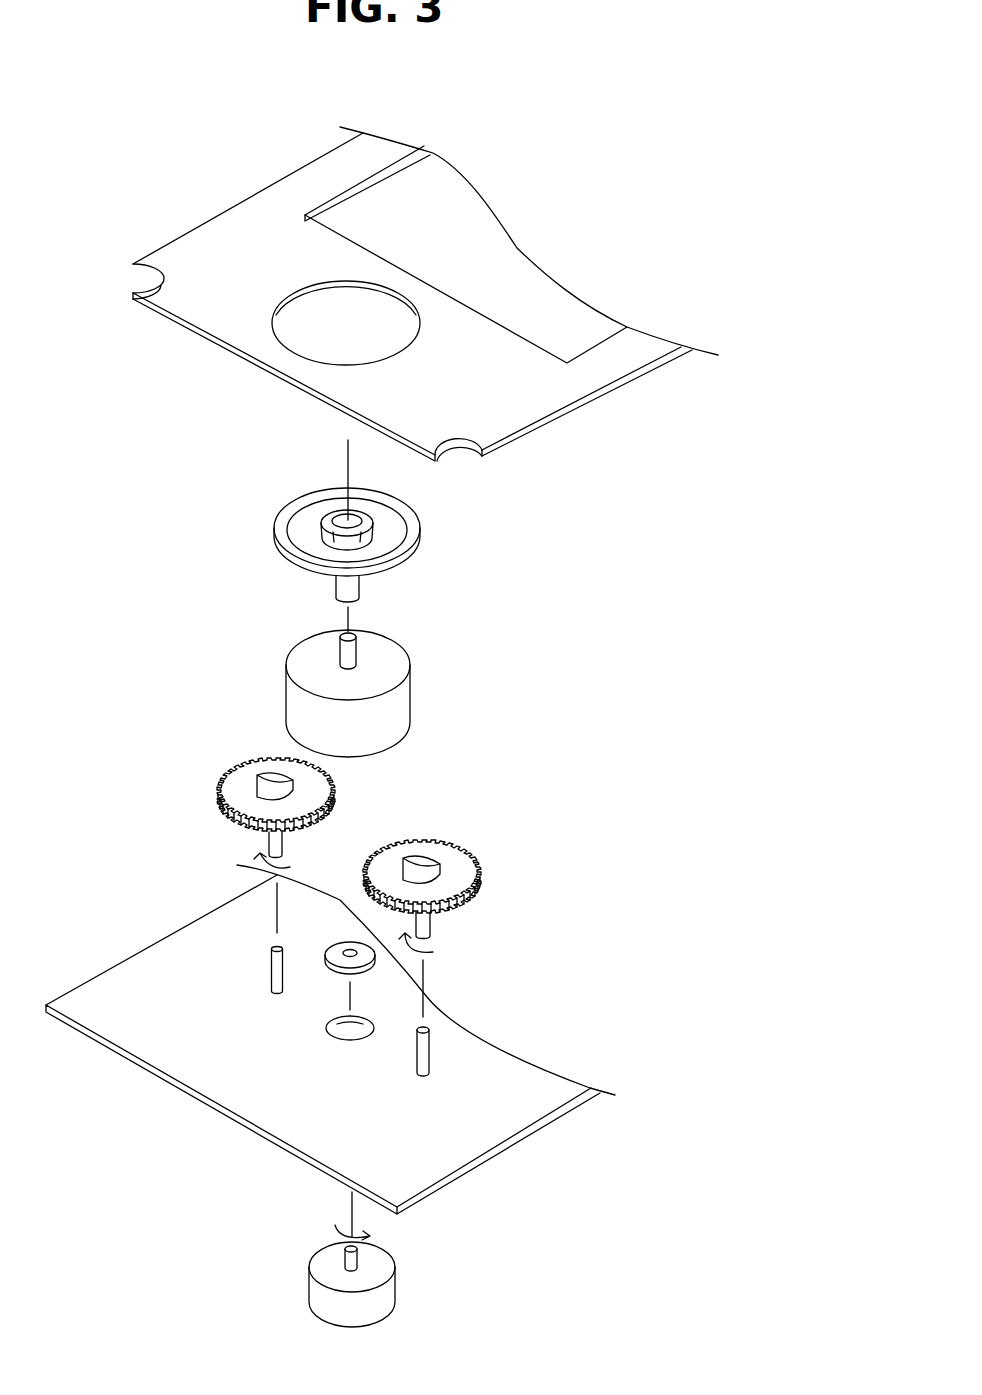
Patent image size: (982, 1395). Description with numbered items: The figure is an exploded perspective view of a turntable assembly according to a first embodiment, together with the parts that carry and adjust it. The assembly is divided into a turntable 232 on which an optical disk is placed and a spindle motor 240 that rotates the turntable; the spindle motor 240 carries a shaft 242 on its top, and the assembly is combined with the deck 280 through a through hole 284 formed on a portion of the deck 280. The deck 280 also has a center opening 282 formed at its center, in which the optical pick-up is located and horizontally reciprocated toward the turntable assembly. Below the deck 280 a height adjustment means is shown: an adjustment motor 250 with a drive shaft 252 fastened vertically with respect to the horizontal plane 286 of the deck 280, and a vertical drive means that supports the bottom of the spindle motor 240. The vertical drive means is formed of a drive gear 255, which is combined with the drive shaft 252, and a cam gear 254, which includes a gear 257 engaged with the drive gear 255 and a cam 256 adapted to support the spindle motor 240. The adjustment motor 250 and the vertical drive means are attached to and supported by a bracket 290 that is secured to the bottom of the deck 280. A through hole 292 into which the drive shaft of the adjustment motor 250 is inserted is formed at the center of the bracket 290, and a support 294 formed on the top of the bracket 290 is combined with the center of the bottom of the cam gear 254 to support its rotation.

The turntable 232 is at (400, 541).
The spindle motor 240 is at (400, 703).
The motor shaft 242 is at (352, 652).
The adjustment motor 250 is at (373, 1299).
The drive shaft 252 is at (345, 1260).
The cam gear 254 is at (470, 852).
The drive gear 255 is at (333, 950).
The cam 256 is at (262, 787).
The gear 257 is at (243, 805).
The deck 280 is at (633, 389).
The center opening 282 is at (518, 284).
The through hole 284 is at (343, 321).
The horizontal plane 286 is at (528, 413).
The bracket 290 is at (480, 1132).
The through hole 292 is at (347, 1033).
The support 294 is at (432, 1057).